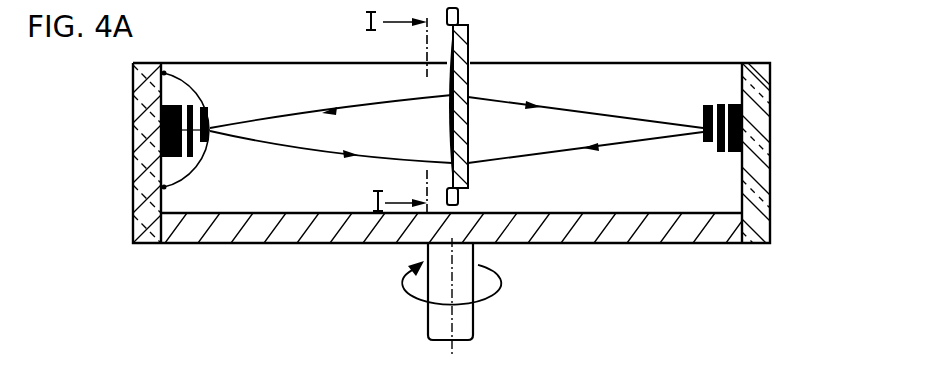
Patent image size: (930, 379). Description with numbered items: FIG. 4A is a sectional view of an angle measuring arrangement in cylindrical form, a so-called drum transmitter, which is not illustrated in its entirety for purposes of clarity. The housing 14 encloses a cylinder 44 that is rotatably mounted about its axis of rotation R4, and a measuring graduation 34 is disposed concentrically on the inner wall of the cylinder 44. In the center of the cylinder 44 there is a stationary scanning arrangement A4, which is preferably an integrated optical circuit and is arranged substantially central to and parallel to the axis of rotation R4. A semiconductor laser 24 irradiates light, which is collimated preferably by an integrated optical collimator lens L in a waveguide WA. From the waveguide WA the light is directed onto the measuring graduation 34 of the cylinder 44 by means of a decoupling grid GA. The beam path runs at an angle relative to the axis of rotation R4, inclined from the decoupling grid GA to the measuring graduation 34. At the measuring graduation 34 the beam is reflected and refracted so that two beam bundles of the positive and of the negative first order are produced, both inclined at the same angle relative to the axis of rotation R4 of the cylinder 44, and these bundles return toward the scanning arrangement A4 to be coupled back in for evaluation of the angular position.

The housing 14 is at (373, 245).
The semiconductor laser 24 is at (458, 14).
The measuring graduation 34 is at (163, 124).
The cylinder 44 is at (615, 188).
The scanning arrangement A4 is at (468, 38).
The axis of rotation R4 is at (455, 315).
The decoupling grid GA is at (452, 97).
The waveguide WA is at (452, 88).
The integrated optical collimator lens L is at (452, 70).